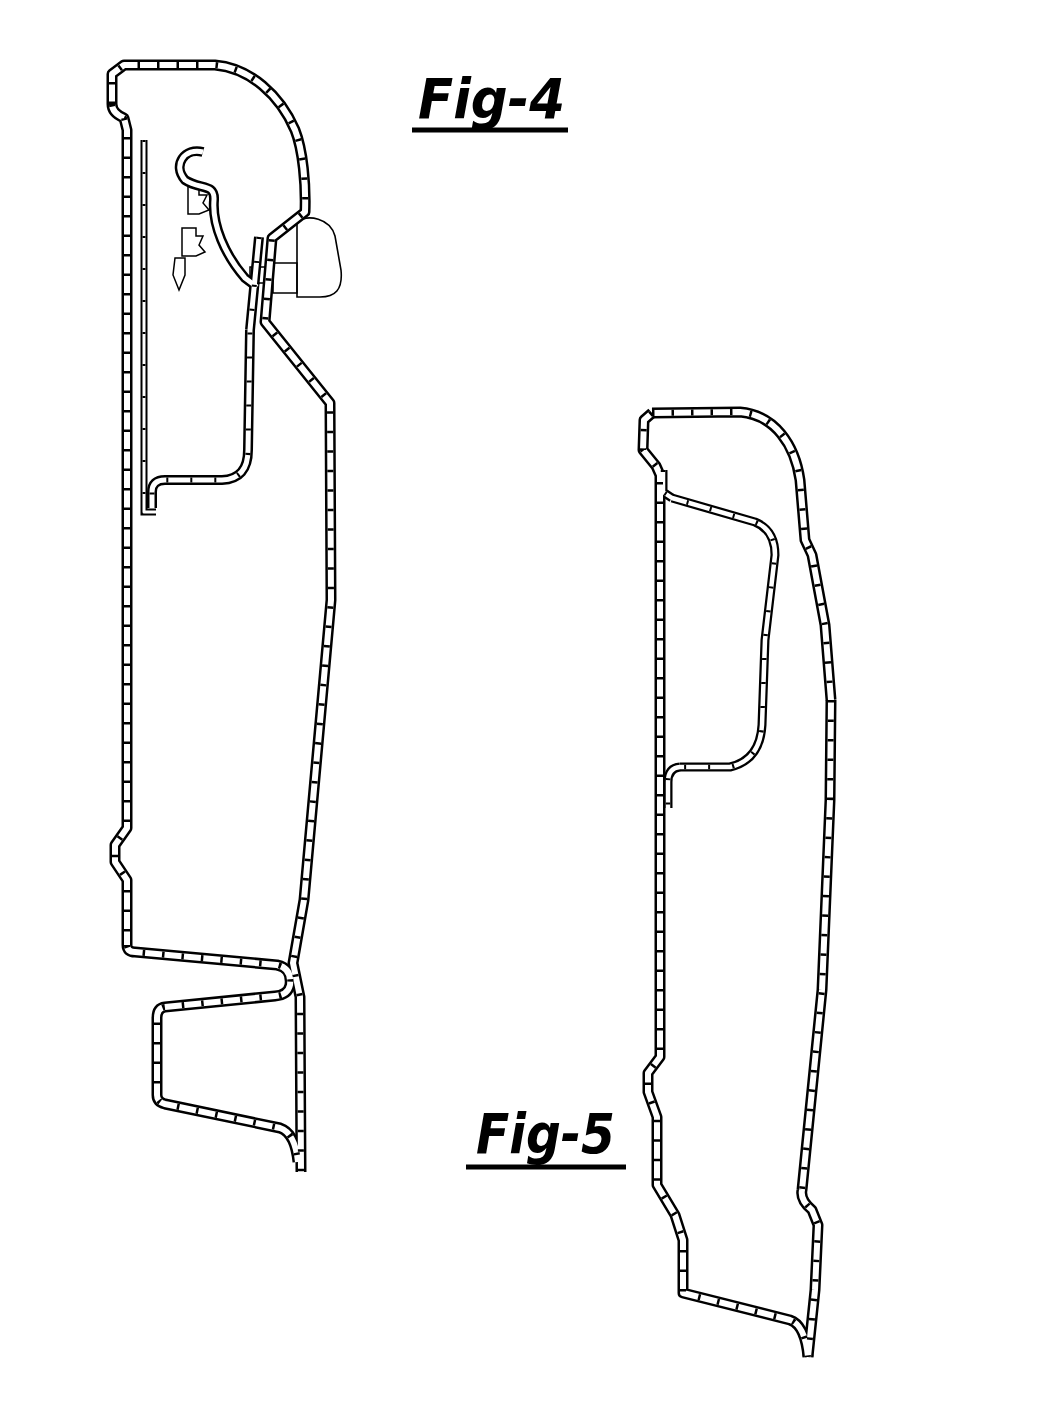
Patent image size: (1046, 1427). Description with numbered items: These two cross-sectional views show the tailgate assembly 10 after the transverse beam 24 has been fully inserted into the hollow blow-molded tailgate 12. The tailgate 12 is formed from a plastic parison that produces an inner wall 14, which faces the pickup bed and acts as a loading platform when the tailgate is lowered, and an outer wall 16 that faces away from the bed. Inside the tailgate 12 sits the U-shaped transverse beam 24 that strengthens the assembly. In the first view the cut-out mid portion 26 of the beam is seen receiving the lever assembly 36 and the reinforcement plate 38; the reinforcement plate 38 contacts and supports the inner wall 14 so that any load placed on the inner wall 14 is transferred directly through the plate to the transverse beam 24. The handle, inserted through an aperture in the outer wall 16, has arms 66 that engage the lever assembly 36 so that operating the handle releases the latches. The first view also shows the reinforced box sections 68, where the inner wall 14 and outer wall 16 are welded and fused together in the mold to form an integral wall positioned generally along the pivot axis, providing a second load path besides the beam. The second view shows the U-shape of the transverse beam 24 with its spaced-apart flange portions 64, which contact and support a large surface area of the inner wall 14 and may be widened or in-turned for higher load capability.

In FIG. 4, the tailgate assembly 10 is at (306, 84).
In FIG. 4, the tailgate 12 is at (338, 446).
In FIG. 5, the tailgate 12 is at (808, 542).
In FIG. 4, the inner wall 14 is at (122, 333).
In FIG. 5, the inner wall 14 is at (655, 613).
In FIG. 5, the outer wall 16 is at (833, 903).
In FIG. 4, the transverse beam 24 is at (224, 486).
In FIG. 5, the transverse beam 24 is at (772, 742).
In FIG. 4, the mid portion 26 is at (268, 235).
In FIG. 4, the lever assembly 36 is at (190, 194).
In FIG. 4, the reinforcement plate 38 is at (152, 390).
In FIG. 5, the flange portions 64 is at (675, 488).
In FIG. 4, the arms 66 is at (198, 152).
In FIG. 4, the reinforced box sections 68 is at (302, 960).